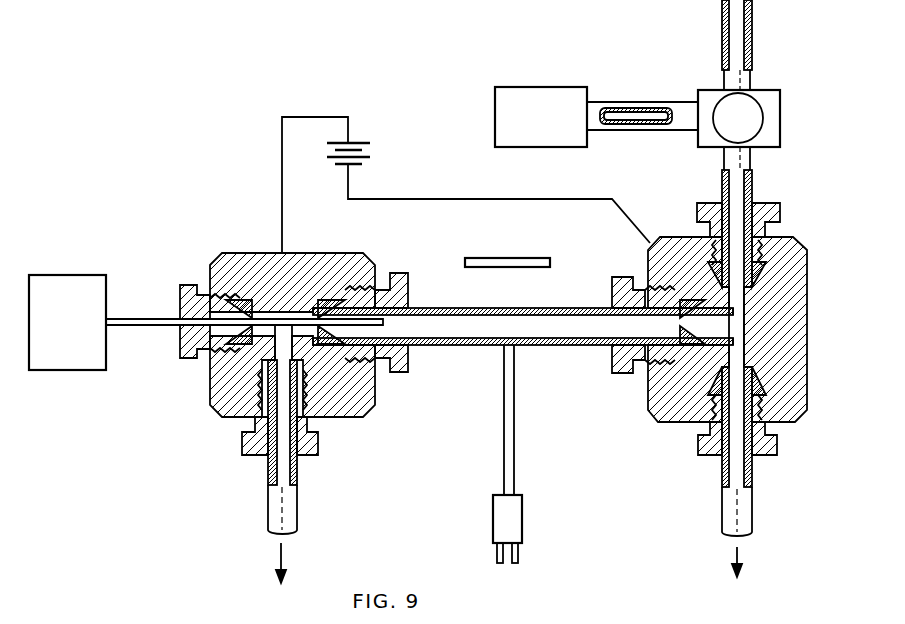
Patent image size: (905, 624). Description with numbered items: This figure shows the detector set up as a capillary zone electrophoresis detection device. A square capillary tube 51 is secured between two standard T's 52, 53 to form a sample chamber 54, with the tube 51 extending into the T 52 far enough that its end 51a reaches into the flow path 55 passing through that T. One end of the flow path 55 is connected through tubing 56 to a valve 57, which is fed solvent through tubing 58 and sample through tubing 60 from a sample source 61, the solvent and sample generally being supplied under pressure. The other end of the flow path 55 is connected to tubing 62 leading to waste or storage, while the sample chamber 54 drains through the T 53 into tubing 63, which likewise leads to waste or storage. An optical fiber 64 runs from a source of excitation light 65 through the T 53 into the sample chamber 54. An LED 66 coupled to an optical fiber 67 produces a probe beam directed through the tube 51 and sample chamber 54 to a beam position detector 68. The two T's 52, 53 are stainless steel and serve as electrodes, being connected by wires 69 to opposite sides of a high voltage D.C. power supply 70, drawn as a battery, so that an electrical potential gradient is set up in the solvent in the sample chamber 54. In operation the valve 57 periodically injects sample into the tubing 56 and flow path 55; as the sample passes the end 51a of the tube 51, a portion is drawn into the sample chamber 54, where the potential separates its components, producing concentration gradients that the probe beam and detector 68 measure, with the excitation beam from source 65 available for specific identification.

The square capillary tube 51 is at (459, 315).
The end of capillary tube 51a is at (738, 335).
The T 52 is at (650, 408).
The T 53 is at (212, 388).
The sample chamber 54 is at (563, 330).
The flow path 55 is at (738, 296).
The tubing 56 is at (752, 183).
The valve 57 is at (770, 95).
The tubing 58 is at (752, 20).
The tubing 60 is at (632, 102).
The sample source 61 is at (512, 87).
The tubing 62 is at (752, 510).
The tubing 63 is at (270, 507).
The optical fiber 64 is at (138, 318).
The source of excitation light 65 is at (60, 275).
The LED 66 is at (512, 518).
The optical fiber 67 is at (504, 445).
The beam position detector 68 is at (523, 258).
The wires 69 is at (282, 172).
The high voltage D.C. power supply 70 is at (364, 155).